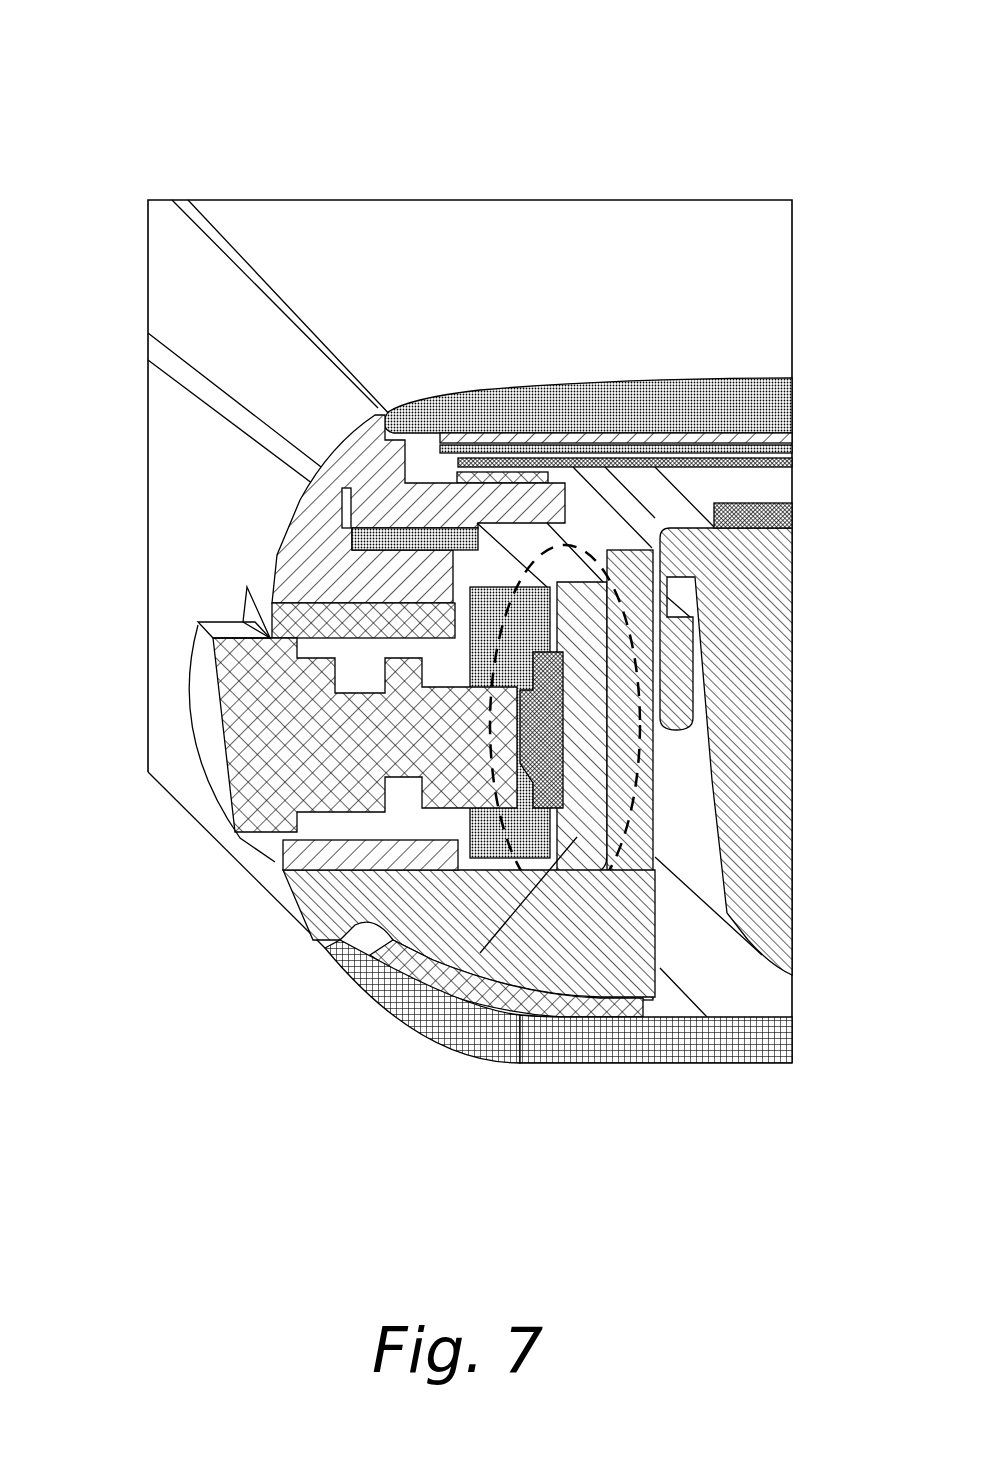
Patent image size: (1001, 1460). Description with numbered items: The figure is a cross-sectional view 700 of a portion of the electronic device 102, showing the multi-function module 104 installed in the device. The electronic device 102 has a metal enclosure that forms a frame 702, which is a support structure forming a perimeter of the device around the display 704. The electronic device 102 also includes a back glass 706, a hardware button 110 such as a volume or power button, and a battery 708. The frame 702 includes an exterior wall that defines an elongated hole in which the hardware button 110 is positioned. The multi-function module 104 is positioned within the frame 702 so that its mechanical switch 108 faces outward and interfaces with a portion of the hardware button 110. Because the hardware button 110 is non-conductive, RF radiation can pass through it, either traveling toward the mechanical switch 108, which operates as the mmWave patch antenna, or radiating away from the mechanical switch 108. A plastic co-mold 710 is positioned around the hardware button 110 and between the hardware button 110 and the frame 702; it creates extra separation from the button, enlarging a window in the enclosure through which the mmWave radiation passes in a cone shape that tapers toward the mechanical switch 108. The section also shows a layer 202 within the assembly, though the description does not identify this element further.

The cross-sectional view 700 is at (121, 51).
The electronic device 102 is at (104, 806).
The multi-function module 104 is at (510, 873).
The mechanical switch 108 is at (370, 980).
The hardware button 110 is at (213, 688).
The adhesive layer 202 is at (427, 1018).
The frame 702 is at (282, 560).
The display 704 is at (557, 402).
The back glass 706 is at (620, 1040).
The battery 708 is at (782, 665).
The plastic co-mold 710 is at (283, 873).